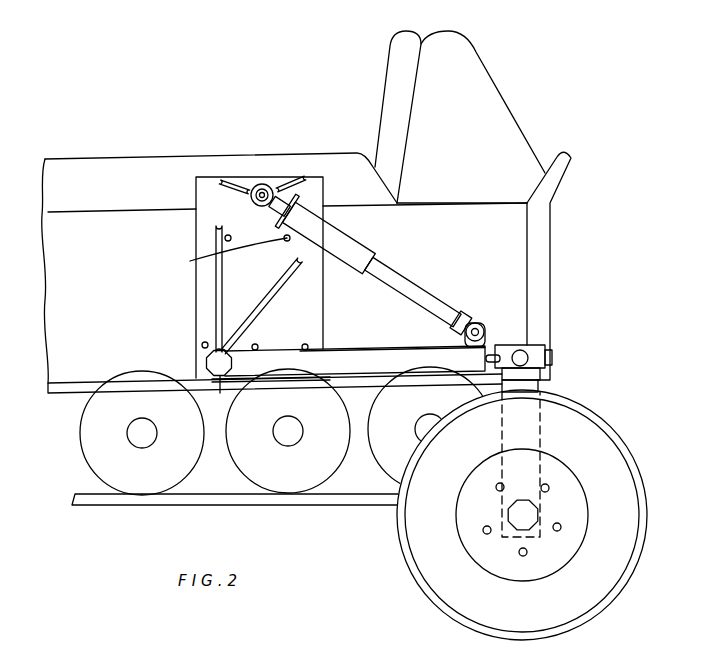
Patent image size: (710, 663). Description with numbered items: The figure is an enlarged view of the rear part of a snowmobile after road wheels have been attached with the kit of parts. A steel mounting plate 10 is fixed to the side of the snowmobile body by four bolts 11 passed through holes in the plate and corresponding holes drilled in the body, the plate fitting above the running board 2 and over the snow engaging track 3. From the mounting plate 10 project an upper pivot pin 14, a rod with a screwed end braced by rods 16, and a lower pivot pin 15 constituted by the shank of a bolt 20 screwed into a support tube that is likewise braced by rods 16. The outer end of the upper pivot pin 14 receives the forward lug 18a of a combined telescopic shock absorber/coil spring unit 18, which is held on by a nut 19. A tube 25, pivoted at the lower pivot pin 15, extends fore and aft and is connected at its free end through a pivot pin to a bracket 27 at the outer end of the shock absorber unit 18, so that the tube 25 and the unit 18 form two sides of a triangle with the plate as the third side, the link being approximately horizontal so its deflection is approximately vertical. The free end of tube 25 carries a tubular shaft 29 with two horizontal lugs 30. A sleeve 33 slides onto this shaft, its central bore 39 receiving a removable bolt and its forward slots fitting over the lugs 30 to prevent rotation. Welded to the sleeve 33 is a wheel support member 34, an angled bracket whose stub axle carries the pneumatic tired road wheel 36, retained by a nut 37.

The mounting plate 10 is at (213, 190).
The running board 2 is at (332, 370).
The tube 25 is at (372, 362).
The snow engaging track 3 is at (187, 500).
The upper pivot pin 14 is at (255, 198).
The nut 19 is at (255, 188).
The rods 16 is at (225, 182).
The bolts 11 is at (200, 249).
The combined telescopic shock absorber/coil spring unit 18 is at (362, 240).
The forward lug 18a is at (272, 190).
The bracket 27 is at (471, 327).
The bolt 20 is at (206, 363).
The lower pivot pin 15 is at (222, 384).
The lugs 30 is at (492, 357).
The central bore 39 is at (528, 354).
The tubular shaft 29 is at (552, 359).
The sleeve 33 is at (541, 371).
The wheel support member 34 is at (527, 385).
The road wheel 36 is at (640, 527).
The nut 37 is at (530, 505).